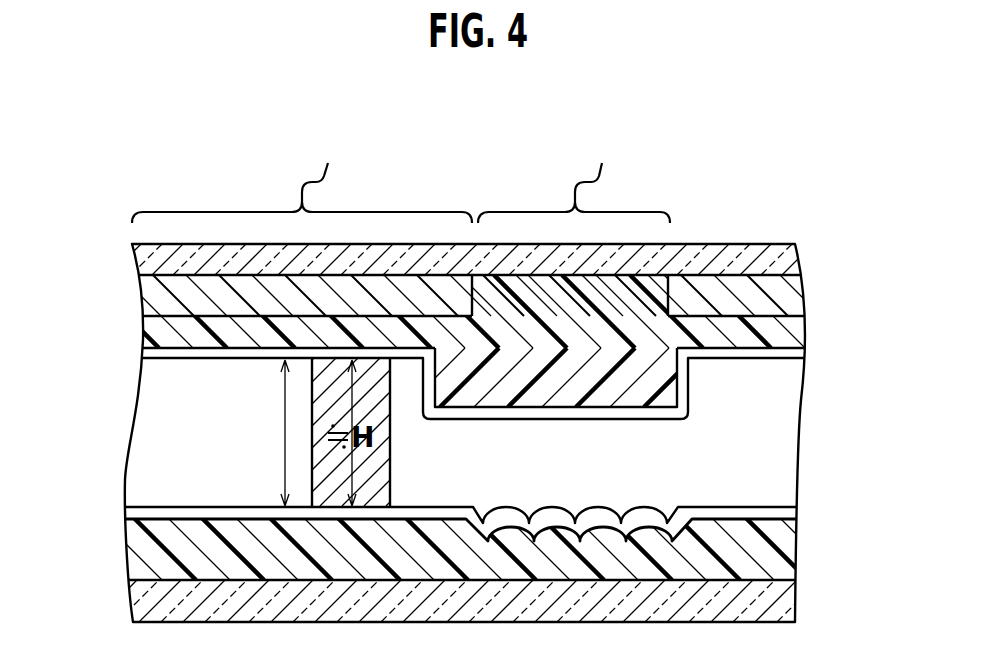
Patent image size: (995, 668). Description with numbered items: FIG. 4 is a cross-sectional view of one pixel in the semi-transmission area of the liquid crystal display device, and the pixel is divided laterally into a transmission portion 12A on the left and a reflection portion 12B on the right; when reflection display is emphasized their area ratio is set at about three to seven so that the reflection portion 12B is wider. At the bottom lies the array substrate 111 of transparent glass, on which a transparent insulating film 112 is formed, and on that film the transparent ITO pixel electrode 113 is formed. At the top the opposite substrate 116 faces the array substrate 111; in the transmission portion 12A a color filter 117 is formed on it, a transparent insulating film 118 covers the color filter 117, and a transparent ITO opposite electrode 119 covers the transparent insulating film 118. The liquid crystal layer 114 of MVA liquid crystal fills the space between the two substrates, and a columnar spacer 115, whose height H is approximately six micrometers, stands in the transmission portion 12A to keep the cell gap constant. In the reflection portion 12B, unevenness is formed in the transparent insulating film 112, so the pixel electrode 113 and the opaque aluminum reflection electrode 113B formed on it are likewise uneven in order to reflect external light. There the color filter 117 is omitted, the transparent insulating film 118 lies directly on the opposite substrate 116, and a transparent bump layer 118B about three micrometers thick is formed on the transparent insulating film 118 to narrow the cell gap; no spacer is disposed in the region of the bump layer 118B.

The array substrate 111 is at (787, 590).
The transparent insulating film 112 is at (787, 553).
The pixel electrode 113 is at (770, 504).
The reflection electrode 113B is at (645, 503).
The liquid crystal layer 114 is at (777, 438).
The spacer 115 is at (392, 468).
The opposite substrate 116 is at (787, 254).
The color filter 117 is at (788, 292).
The transparent insulating film 118 is at (800, 327).
The bump layer 118B is at (667, 385).
The opposite electrode 119 is at (793, 363).
The transmission portion 12A is at (302, 171).
The reflection portion 12B is at (574, 171).